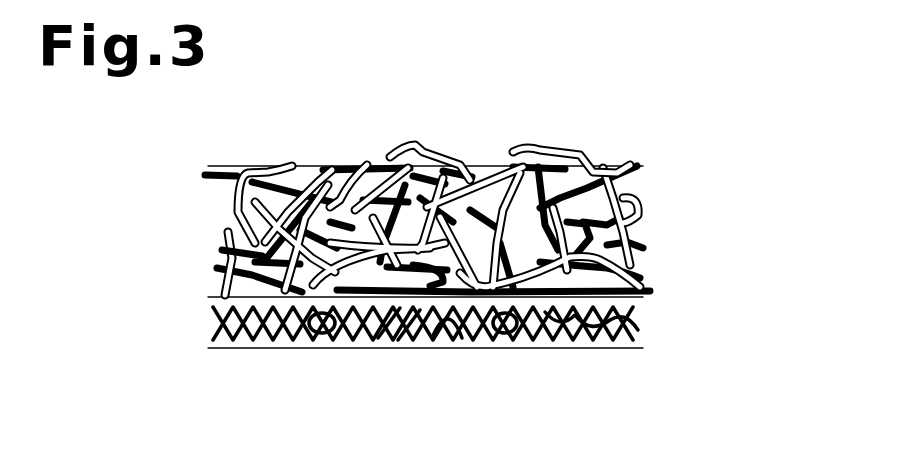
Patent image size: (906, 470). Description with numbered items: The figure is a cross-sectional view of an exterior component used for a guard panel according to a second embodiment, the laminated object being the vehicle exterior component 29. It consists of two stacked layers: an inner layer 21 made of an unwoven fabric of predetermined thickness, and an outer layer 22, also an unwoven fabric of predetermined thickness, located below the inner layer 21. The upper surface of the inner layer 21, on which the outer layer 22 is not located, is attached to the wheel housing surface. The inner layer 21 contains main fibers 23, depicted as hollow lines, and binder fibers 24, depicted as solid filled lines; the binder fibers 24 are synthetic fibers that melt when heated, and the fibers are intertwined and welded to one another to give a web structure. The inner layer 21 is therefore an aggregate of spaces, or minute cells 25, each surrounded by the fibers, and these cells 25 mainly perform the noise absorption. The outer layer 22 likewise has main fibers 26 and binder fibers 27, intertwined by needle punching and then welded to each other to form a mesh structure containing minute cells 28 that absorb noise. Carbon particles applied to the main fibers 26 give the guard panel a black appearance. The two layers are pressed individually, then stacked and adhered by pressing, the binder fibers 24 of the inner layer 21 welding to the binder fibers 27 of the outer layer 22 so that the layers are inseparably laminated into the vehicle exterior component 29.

The inner layer 21 is at (663, 163).
The outer layer 22 is at (663, 297).
The main fibers 23 is at (430, 141).
The binder fibers 24 is at (568, 139).
The minute cells 25 is at (257, 213).
The main fibers 26 is at (447, 340).
The binder fibers 27 is at (407, 340).
The minute cells 28 is at (392, 330).
The vehicle exterior component 29 is at (753, 210).